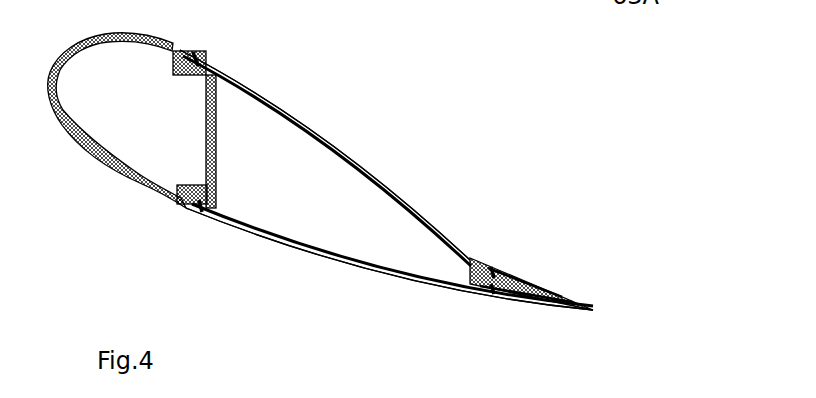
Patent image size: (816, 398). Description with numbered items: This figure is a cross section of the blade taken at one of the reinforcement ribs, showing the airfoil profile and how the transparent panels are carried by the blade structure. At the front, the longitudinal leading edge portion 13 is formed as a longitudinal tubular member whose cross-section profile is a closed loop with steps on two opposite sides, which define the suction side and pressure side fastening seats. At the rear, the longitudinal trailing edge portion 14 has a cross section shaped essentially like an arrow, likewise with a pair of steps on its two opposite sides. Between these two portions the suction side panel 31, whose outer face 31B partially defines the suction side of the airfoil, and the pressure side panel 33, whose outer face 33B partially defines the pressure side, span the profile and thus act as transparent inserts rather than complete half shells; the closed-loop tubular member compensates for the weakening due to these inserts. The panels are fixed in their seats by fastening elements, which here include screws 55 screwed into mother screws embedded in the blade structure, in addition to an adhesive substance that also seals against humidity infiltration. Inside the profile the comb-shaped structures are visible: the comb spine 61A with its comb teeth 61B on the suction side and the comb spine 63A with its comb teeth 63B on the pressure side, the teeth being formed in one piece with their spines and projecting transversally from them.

The longitudinal leading edge portion 13 is at (84, 153).
The longitudinal trailing edge portion 14 is at (593, 291).
The suction side panel 31 is at (353, 159).
The outer face 31B is at (323, 139).
The pressure side panel 33 is at (328, 259).
The outer face 33B is at (250, 234).
The screws 55 is at (195, 58).
The comb spine 61A is at (536, 287).
The comb teeth 61B is at (260, 100).
The comb spine 63A is at (543, 303).
The comb teeth 63B is at (394, 258).